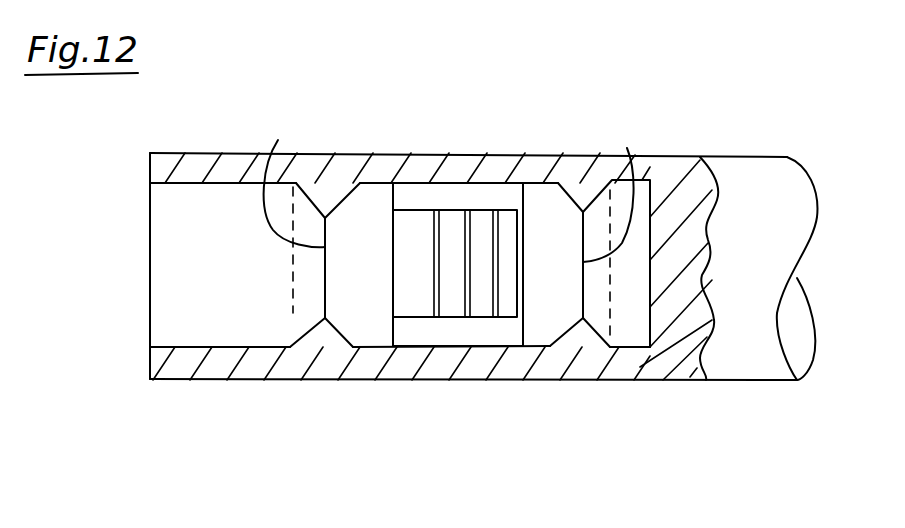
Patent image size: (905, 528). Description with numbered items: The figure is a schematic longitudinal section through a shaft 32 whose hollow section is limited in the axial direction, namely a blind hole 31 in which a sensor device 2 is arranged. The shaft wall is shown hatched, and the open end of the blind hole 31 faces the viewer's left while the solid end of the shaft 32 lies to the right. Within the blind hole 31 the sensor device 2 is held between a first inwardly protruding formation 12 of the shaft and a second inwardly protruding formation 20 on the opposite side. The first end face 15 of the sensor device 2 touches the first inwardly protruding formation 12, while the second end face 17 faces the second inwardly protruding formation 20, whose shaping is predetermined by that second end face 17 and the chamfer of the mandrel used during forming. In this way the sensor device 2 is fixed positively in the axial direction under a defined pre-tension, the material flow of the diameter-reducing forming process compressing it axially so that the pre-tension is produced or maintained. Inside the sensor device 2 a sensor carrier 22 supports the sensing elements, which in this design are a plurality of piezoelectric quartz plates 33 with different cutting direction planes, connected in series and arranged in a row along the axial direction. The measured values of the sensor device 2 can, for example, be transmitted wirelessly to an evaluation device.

The sensor device 2 is at (509, 188).
The first inwardly protruding formation 12 is at (583, 193).
The first end face 15 is at (627, 148).
The second end face 17 is at (278, 140).
The second inwardly protruding formation 20 is at (331, 187).
The sensor carrier 22 is at (418, 222).
The blind hole 31 is at (180, 275).
The shaft 32 is at (755, 133).
The piezoelectric quartz plates 33 is at (492, 278).